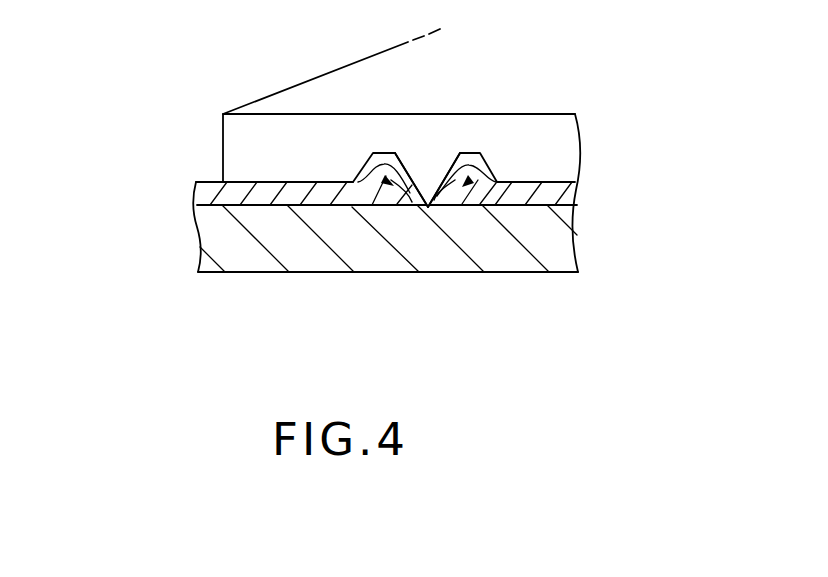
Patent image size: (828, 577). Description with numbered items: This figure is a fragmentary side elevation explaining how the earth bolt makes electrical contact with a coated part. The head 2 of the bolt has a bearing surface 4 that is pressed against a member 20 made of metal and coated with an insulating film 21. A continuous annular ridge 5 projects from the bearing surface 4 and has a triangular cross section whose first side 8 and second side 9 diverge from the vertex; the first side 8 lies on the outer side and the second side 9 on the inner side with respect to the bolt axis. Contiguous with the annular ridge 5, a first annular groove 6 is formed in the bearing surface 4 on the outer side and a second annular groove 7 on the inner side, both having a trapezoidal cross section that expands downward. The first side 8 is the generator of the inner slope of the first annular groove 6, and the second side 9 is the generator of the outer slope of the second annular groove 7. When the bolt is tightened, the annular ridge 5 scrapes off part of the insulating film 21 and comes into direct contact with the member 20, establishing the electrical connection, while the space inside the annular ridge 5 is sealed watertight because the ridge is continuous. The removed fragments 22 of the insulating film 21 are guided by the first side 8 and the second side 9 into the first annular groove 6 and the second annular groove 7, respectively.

The head 2 is at (302, 84).
The bearing surface 4 is at (217, 192).
The annular ridge 5 is at (430, 180).
The first annular groove 6 is at (371, 168).
The second annular groove 7 is at (489, 167).
The first side 8 is at (391, 153).
The second side 9 is at (463, 153).
The member 20 is at (222, 250).
The insulating film 21 is at (203, 194).
The removed fragments 22 is at (386, 180).